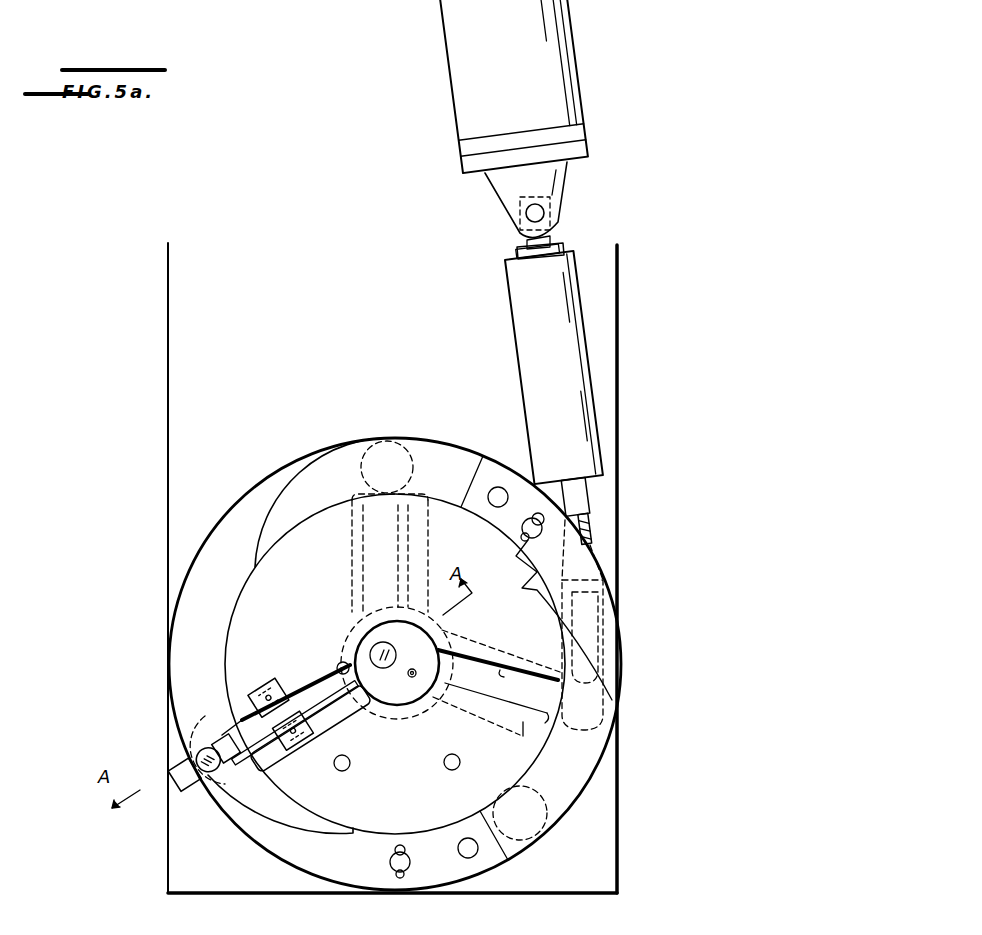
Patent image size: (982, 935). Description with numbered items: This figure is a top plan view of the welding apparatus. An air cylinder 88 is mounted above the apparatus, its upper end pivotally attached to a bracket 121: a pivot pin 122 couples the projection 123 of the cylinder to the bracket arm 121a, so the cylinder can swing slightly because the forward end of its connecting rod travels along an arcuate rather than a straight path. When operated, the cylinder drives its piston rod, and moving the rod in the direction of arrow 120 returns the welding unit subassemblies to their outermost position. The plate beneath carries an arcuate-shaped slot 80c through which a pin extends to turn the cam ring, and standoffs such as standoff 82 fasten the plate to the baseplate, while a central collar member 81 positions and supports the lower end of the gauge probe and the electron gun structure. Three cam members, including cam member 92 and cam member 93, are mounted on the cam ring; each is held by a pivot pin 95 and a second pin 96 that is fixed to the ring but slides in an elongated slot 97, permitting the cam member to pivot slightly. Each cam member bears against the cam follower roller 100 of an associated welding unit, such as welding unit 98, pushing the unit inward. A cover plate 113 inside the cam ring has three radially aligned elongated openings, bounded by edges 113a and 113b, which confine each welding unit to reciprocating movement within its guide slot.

The bracket 121 is at (582, 82).
The bracket arm 121a is at (565, 185).
The pivot pin 122 is at (545, 212).
The projection 123 is at (522, 243).
The air cylinder 88 is at (561, 388).
The arrow 120 is at (592, 528).
The cam member 92 is at (447, 877).
The standoff 82 is at (414, 440).
The pin 95 is at (500, 487).
The second pin 96 is at (516, 629).
The elongated slot 97 is at (524, 534).
The welding unit 98 is at (350, 557).
The cam member 93 is at (528, 582).
The cover plate 113 is at (446, 752).
The edge 113a is at (543, 719).
The edge 113b is at (503, 668).
The arcuate-shaped slot 80c is at (592, 712).
The collar member 81 is at (240, 727).
The cam follower roller 100 is at (196, 750).